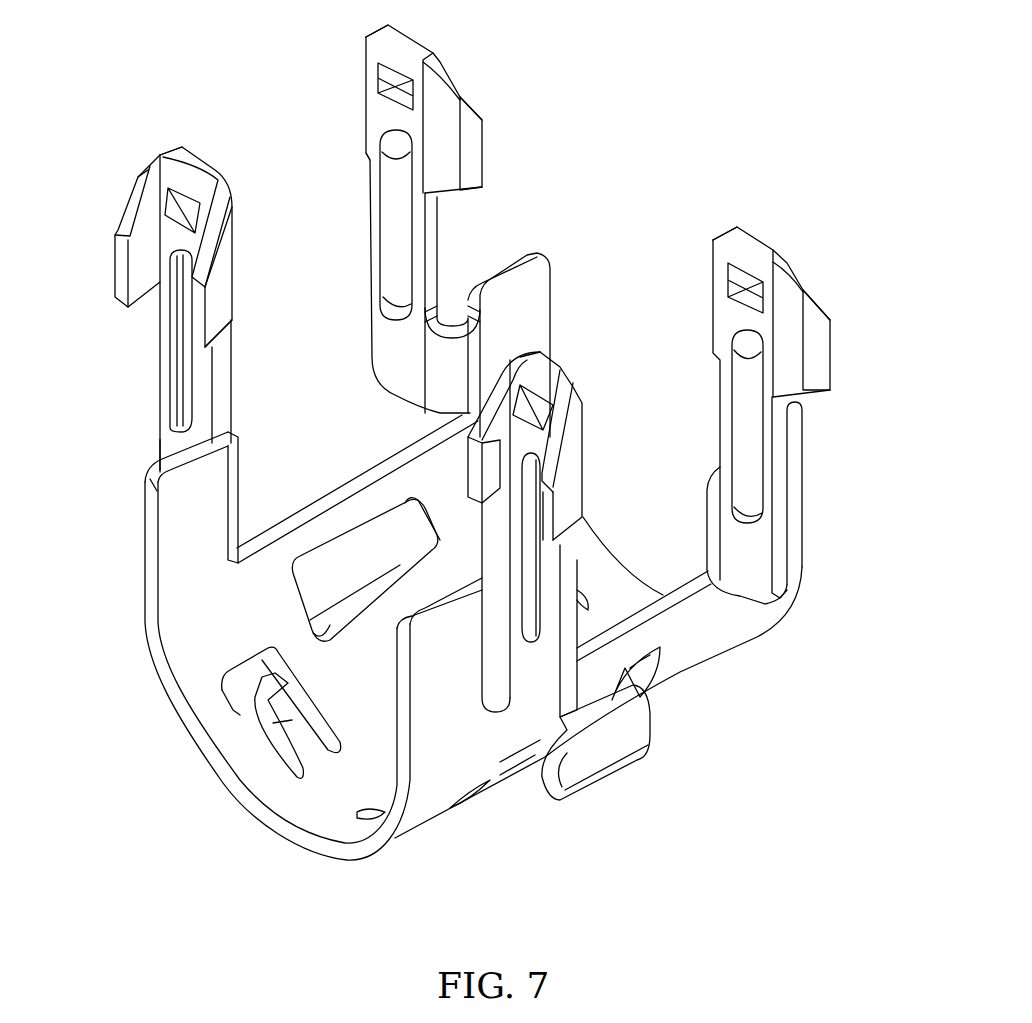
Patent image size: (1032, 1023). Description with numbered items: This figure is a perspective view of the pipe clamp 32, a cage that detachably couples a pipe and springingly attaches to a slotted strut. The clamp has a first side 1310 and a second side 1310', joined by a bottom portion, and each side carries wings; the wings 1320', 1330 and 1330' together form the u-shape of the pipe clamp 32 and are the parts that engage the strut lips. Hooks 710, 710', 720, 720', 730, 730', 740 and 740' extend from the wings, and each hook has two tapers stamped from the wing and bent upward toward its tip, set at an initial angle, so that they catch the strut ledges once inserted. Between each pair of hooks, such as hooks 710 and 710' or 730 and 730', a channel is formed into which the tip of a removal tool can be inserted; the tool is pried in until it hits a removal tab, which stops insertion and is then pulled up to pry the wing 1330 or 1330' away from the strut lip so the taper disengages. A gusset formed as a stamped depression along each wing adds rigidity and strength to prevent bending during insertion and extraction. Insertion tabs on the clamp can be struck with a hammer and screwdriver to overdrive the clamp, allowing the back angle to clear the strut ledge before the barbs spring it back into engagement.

The pipe clamp 32 is at (770, 740).
The hook 710 is at (454, 574).
The hook 710' is at (568, 534).
The hook 720 is at (731, 415).
The hook 720' is at (844, 464).
The hook 730 is at (236, 295).
The hook 730' is at (95, 231).
The hook 740 is at (465, 109).
The hook 740' is at (323, 127).
The first side 1310 is at (313, 645).
The second side 1310' is at (127, 584).
The wing 1320' is at (649, 620).
The wing 1330 is at (113, 442).
The wing 1330' is at (477, 316).